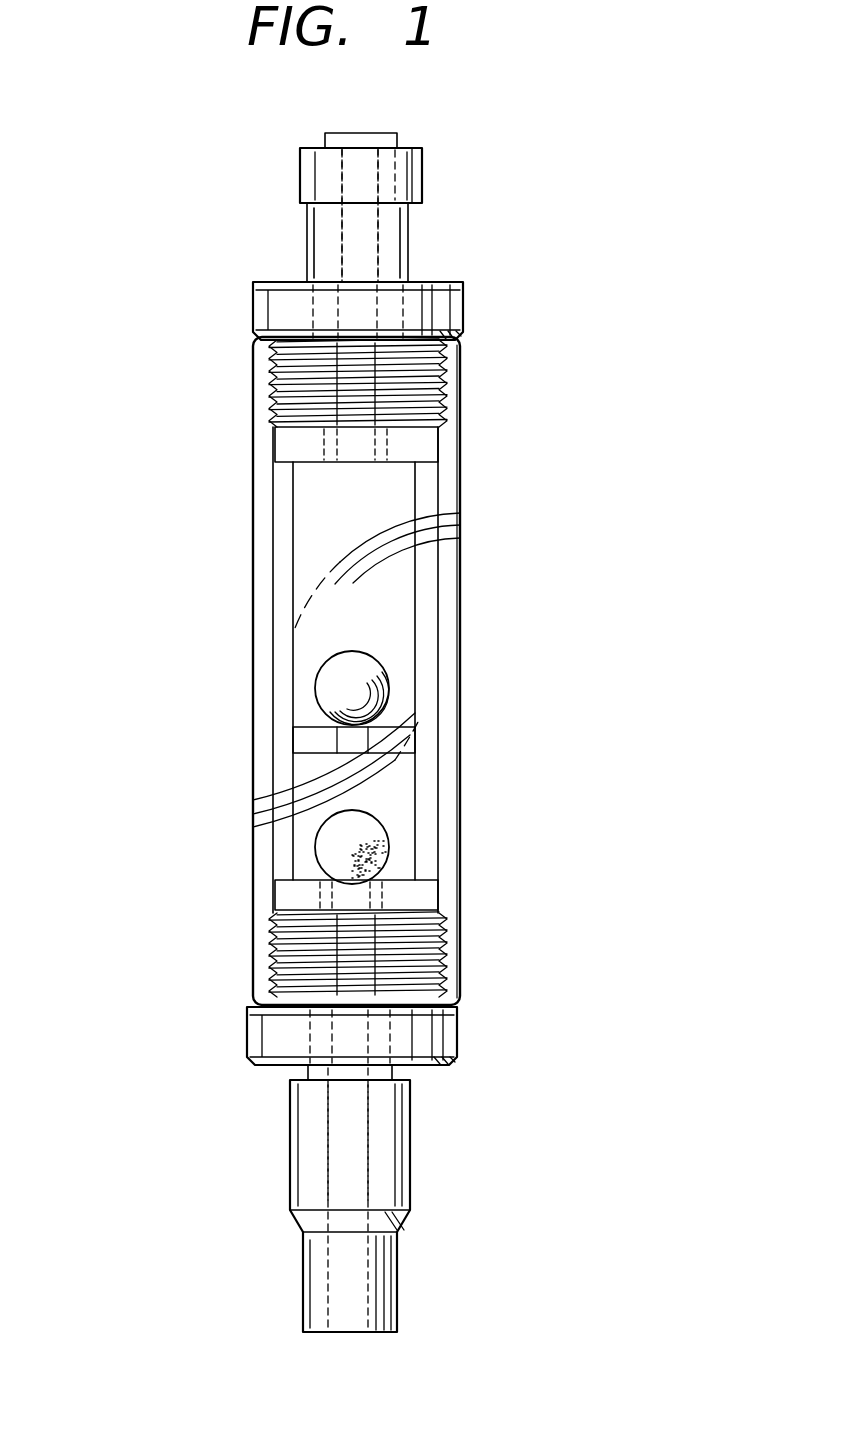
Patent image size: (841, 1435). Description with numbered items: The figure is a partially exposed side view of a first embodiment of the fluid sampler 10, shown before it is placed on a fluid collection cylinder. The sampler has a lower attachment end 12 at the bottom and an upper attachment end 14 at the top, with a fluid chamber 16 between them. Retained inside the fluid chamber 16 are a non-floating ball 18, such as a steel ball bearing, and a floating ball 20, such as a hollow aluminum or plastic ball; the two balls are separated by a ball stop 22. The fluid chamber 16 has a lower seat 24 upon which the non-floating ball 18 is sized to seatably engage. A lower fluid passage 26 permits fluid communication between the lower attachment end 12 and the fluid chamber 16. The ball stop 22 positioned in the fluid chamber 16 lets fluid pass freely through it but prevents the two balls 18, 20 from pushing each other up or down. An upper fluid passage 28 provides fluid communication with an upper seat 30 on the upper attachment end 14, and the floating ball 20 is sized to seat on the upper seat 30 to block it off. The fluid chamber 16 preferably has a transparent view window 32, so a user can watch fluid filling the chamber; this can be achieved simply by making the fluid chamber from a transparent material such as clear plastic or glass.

The fluid sampler 10 is at (186, 722).
The lower attachment end 12 is at (395, 1180).
The upper attachment end 14 is at (403, 180).
The fluid chamber 16 is at (395, 638).
The non-floating ball 18 is at (388, 845).
The floating ball 20 is at (390, 686).
The ball stop 22 is at (400, 745).
The lower seat 24 is at (290, 895).
The lower fluid passage 26 is at (345, 1137).
The upper fluid passage 28 is at (360, 178).
The upper seat 30 is at (290, 444).
The transparent view window 32 is at (300, 567).